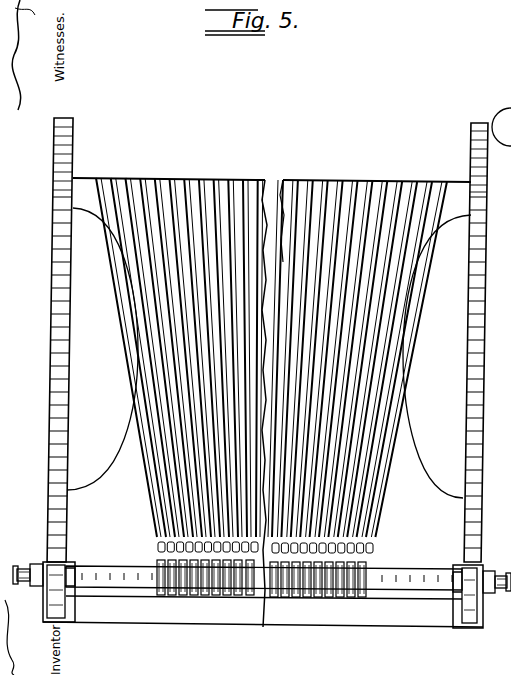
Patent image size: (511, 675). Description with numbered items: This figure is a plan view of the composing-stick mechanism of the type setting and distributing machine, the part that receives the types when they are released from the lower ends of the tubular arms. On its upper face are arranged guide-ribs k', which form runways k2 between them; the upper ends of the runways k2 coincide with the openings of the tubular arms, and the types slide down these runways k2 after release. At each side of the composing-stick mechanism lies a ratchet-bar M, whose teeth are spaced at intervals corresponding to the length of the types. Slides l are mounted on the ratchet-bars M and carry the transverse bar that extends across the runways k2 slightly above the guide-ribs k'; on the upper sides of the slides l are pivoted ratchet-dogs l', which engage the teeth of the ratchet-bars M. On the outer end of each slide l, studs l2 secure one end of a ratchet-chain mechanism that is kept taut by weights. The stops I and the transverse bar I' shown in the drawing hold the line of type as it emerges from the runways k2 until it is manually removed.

The guide-ribs k' is at (272, 340).
The runways k2 is at (183, 177).
The ratchet-bar M is at (65, 443).
The comb teeth I is at (261, 590).
The shaft bar I' is at (264, 565).
The slides l is at (269, 590).
The ratchet-dogs l' is at (273, 598).
The studs l2 is at (30, 564).